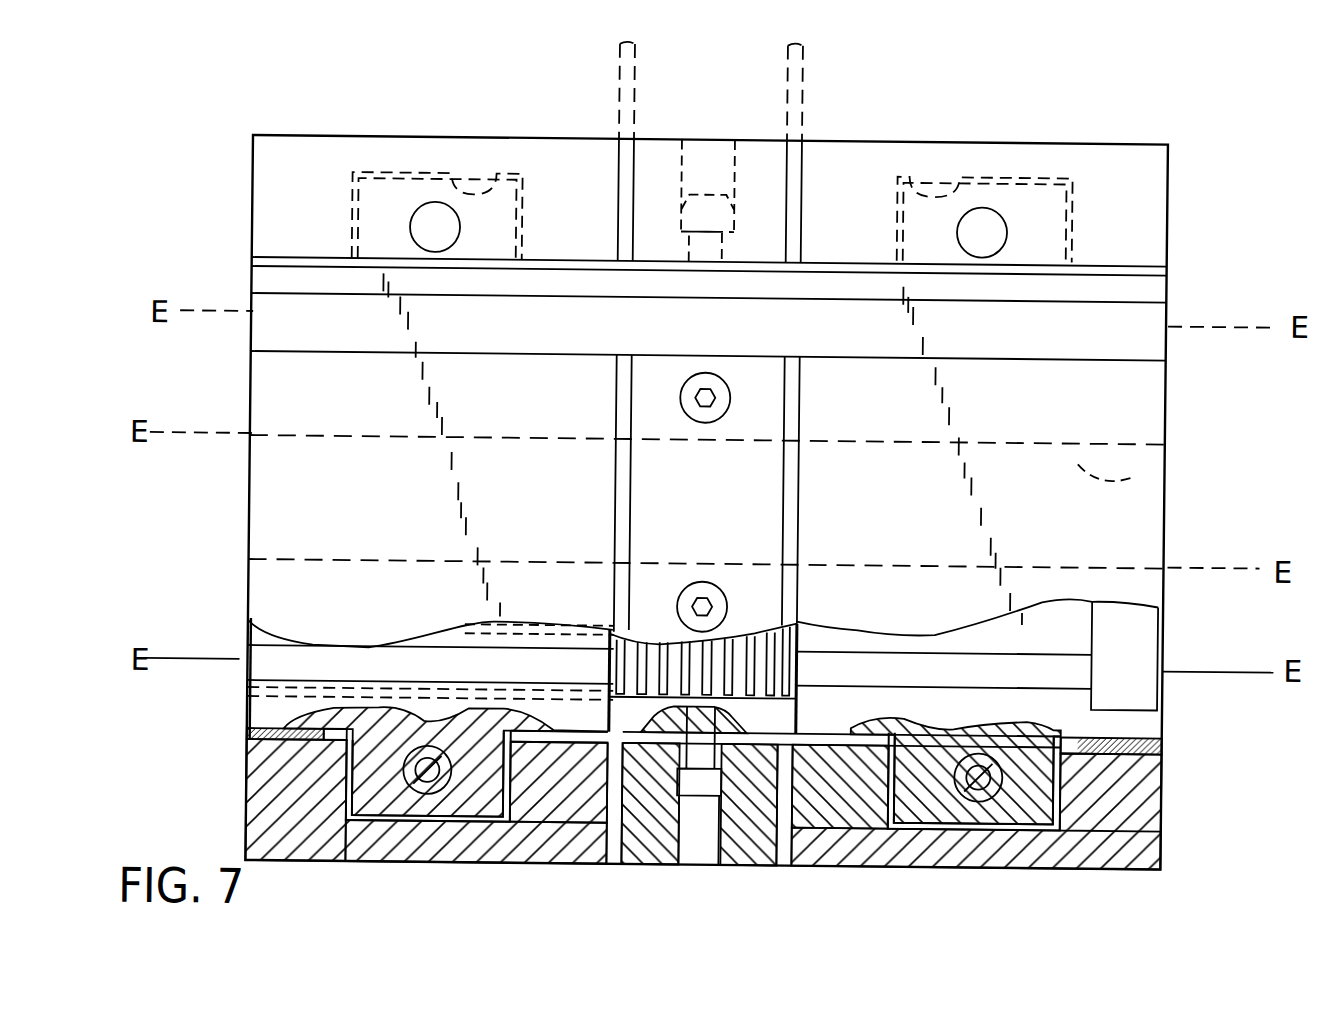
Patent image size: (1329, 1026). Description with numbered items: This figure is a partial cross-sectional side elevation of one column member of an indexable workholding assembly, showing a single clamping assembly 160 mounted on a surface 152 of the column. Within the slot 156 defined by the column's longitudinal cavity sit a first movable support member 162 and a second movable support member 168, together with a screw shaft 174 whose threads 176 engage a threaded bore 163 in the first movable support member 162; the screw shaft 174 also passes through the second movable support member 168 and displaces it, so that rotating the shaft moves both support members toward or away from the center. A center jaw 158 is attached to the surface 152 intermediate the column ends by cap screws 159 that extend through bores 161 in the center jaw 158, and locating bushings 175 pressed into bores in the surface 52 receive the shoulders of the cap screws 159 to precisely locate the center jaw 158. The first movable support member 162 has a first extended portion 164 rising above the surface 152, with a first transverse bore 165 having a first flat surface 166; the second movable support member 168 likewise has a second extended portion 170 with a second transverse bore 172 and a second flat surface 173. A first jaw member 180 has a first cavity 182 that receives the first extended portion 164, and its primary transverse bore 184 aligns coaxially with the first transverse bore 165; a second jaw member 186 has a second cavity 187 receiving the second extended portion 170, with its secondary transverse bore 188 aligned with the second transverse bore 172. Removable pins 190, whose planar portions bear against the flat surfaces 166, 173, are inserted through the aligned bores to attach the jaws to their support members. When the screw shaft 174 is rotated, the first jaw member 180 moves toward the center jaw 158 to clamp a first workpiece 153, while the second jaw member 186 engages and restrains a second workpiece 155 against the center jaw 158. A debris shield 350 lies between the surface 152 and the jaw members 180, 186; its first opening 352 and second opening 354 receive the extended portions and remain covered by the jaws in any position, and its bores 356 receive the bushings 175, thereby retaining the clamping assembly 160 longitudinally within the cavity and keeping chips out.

The surface 52 is at (1149, 266).
The surface of the column 152 is at (289, 257).
The first workpiece 153 is at (627, 68).
The second workpiece 155 is at (796, 74).
The slot 156 is at (1134, 469).
The center jaw 158 is at (793, 214).
The cap screws 159 is at (706, 195).
The clamping assembly 160 is at (268, 712).
The bores 161 is at (687, 710).
The first movable support member 162 is at (286, 738).
The threaded bore 163 is at (256, 688).
The first extended portion 164 is at (379, 212).
The first transverse bore 165 is at (439, 795).
The first flat surface 166 is at (361, 857).
The second movable support member 168 is at (1149, 714).
The second extended portion 170 is at (1046, 209).
The second transverse bore 172 is at (982, 794).
The second flat surface 173 is at (992, 794).
The screw shaft 174 is at (637, 628).
The locating bushings 175 is at (617, 752).
The threads 176 is at (773, 693).
The first jaw member 180 is at (596, 221).
The first cavity 182 is at (498, 187).
The primary transverse bore 184 is at (431, 218).
The second jaw member 186 is at (1156, 225).
The second cavity 187 is at (956, 183).
The secondary transverse bore 188 is at (1006, 207).
The removable pins 190 is at (972, 757).
The debris shield 350 is at (1116, 741).
The first opening 352 is at (366, 724).
The second opening 354 is at (1056, 712).
The bores 356 is at (766, 665).